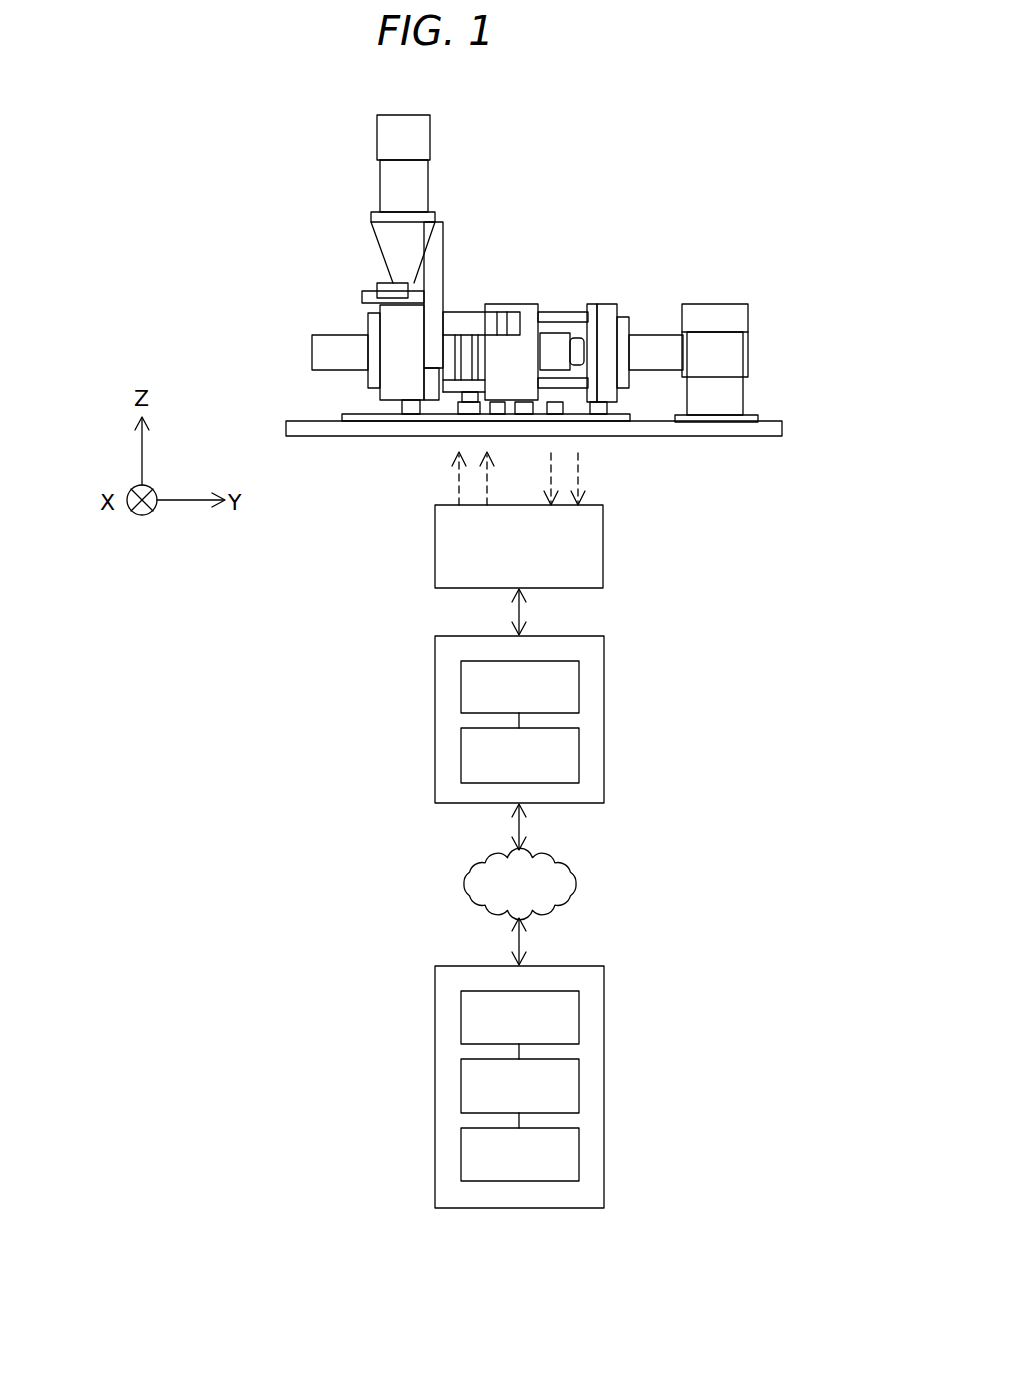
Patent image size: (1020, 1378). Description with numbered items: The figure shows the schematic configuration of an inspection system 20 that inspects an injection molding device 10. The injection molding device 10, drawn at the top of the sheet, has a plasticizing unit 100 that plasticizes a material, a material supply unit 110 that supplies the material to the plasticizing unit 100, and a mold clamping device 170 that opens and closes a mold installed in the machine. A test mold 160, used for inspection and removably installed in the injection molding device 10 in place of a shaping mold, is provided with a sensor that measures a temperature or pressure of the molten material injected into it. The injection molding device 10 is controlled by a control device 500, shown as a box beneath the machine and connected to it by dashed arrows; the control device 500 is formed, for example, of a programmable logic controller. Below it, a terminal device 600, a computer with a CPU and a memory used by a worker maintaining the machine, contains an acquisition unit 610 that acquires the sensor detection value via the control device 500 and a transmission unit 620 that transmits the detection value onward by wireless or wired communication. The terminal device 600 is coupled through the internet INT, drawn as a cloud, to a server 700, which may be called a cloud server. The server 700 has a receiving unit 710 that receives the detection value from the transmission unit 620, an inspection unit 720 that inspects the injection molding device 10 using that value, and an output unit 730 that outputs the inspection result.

The inspection system 20 is at (157, 112).
The injection molding device 10 is at (593, 176).
The plasticizing unit 100 is at (292, 348).
The material supply unit 110 is at (380, 186).
The test mold 160 is at (560, 290).
The mold clamping device 170 is at (695, 287).
The control device 500 is at (603, 545).
The terminal device 600 is at (604, 675).
The acquisition unit 610 is at (461, 689).
The transmission unit 620 is at (461, 756).
The internet INT is at (575, 868).
The server 700 is at (604, 1007).
The receiving unit 710 is at (461, 1019).
The inspection unit 720 is at (461, 1086).
The output unit 730 is at (461, 1154).